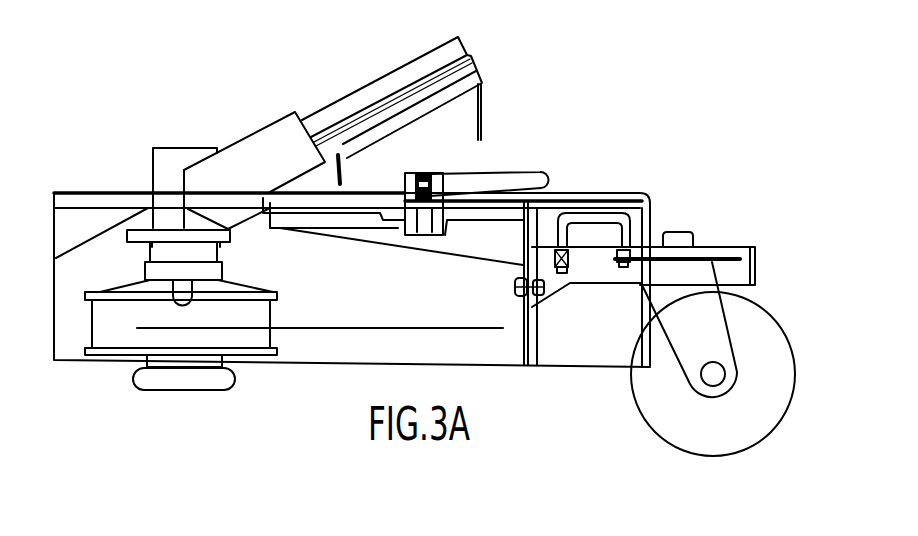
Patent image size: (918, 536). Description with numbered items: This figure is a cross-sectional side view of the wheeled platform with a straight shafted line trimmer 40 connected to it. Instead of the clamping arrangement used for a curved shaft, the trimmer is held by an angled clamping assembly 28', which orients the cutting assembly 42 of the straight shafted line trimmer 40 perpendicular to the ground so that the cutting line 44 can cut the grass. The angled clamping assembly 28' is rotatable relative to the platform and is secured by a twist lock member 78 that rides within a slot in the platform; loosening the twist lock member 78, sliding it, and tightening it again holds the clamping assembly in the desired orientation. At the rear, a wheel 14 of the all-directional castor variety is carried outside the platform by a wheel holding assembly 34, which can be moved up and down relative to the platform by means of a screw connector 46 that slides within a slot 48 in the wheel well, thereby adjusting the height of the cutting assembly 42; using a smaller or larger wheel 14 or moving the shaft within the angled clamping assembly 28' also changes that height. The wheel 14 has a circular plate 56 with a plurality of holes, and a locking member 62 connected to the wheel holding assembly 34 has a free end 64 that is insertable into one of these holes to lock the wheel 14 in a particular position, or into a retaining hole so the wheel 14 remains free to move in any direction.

The wheel 14 is at (794, 367).
The angled clamping assembly 28' is at (418, 110).
The wheel holding assembly 34 is at (757, 268).
The straight shafted line trimmer 40 is at (173, 147).
The cutting assembly 42 is at (90, 316).
The cutting line 44 is at (353, 328).
The screw connector 46 is at (515, 285).
The slot 48 is at (518, 318).
The circular plate 56 is at (728, 248).
The locking member 62 is at (596, 213).
The free end 64 is at (628, 250).
The twist lock member 78 is at (493, 170).